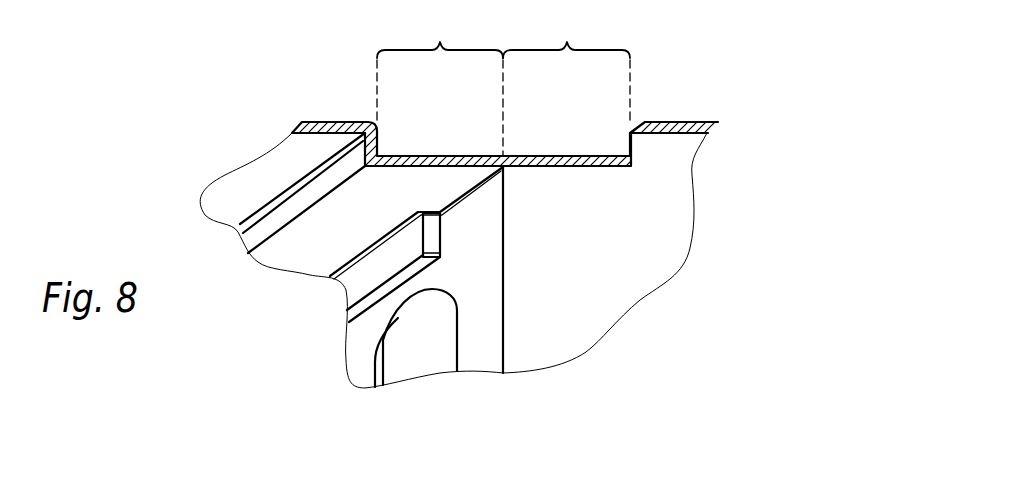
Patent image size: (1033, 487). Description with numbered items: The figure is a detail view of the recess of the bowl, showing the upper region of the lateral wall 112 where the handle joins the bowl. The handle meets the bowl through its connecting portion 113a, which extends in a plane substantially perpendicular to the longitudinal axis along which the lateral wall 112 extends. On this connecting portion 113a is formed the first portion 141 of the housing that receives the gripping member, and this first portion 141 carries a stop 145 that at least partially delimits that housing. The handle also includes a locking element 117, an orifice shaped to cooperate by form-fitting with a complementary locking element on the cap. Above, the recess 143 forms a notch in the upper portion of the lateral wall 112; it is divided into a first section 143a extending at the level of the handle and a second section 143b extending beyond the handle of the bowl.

The lateral wall 112 is at (635, 243).
The connecting portion 113a is at (360, 345).
The locking element 117 is at (372, 273).
The first portion of the housing 141 is at (353, 208).
The recess 143 is at (598, 148).
The first section of the recess 143a is at (440, 84).
The second section of the recess 143b is at (566, 67).
The stop 145 is at (278, 218).